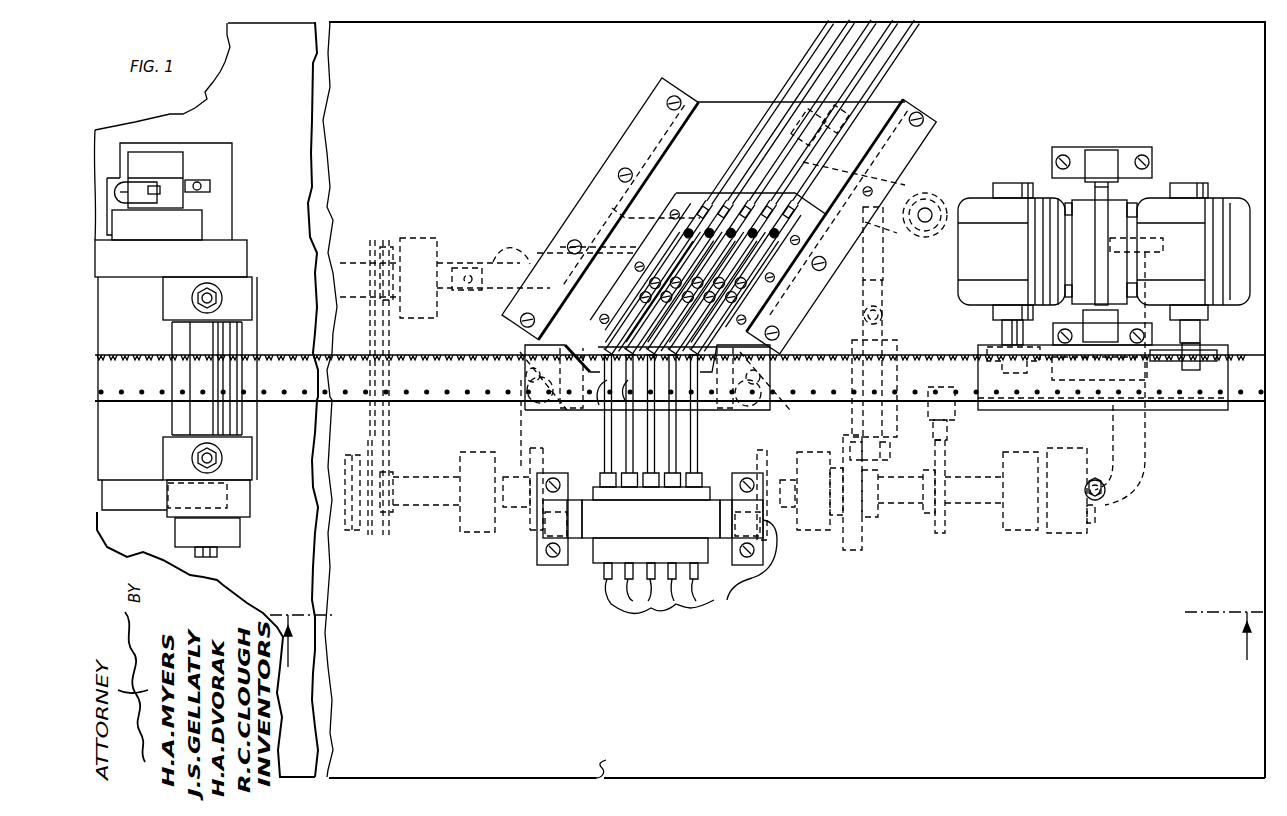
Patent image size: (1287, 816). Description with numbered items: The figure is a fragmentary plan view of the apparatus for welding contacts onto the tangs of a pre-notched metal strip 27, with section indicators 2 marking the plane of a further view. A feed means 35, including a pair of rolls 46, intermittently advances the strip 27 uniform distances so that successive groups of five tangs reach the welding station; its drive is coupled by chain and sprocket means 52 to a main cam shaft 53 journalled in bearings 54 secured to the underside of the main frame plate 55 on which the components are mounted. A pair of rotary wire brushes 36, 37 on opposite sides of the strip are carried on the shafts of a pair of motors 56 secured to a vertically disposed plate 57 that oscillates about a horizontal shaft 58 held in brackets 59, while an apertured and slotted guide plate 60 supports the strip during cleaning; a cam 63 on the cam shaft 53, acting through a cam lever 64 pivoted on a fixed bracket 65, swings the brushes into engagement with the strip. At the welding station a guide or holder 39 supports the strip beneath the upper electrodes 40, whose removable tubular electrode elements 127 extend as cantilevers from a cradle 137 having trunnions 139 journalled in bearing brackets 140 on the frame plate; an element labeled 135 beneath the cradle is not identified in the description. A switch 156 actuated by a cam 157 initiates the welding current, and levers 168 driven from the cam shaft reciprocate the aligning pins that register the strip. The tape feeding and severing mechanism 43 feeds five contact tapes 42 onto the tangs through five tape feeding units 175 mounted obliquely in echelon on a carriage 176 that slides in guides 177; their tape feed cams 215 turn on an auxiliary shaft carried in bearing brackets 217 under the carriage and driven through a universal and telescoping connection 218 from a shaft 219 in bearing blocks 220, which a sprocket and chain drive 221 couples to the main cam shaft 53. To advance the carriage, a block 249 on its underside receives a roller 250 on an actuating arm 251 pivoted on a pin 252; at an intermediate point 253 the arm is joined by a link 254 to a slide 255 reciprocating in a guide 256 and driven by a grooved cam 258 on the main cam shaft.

The section line 2- 2 is at (767, 650).
The strip 27 is at (430, 401).
The feed means 35 is at (262, 260).
The rotary brush 36 is at (1203, 347).
The rotary brush 37 is at (993, 347).
The guide or holder 39 is at (525, 347).
The upper electrodes 40 is at (640, 399).
The contact tapes 42 is at (828, 42).
The tape feeding and severing mechanism 43 is at (685, 190).
The rolls 46 is at (192, 415).
The chain and sprocket means 52 is at (355, 532).
The main cam shaft 53 is at (433, 505).
The bearings 54 is at (475, 532).
The main frame plate 55 is at (797, 780).
The motors 56 is at (985, 208).
The plate 57 is at (1102, 215).
The horizontal shaft 58 is at (1077, 150).
The brackets 59 is at (1100, 153).
The guide plate 60 is at (1195, 400).
The cam 63 is at (1074, 536).
The cam lever 64 is at (1141, 468).
The fixed bracket 65 is at (1138, 405).
The tubular metal electrode elements 127 is at (665, 444).
The wires 135 is at (684, 610).
The cradle 137 is at (610, 540).
The trunnions 139 is at (545, 548).
The bearing brackets 140 is at (503, 547).
The switch 156 is at (952, 412).
The cam 157 is at (942, 534).
The levers 168 is at (521, 434).
The tape feeding units 175 is at (788, 210).
The carriage 176 is at (737, 100).
The guides 177 is at (632, 137).
The cams 215 is at (641, 206).
The bearing brackets 217 is at (603, 240).
The universal and telescoping connection 218 is at (516, 252).
The shaft 219 is at (346, 258).
The bearing blocks 220 is at (422, 232).
The sprocket and chain drive 221 is at (388, 342).
The block 249 is at (813, 113).
The roller 250 is at (830, 120).
The actuating arm 251 is at (907, 180).
The pin 252 is at (935, 205).
The intermediate point 253 is at (883, 249).
The link 254 is at (890, 305).
The slide 255 is at (883, 322).
The guide 256 is at (900, 350).
The cam 258 is at (852, 544).